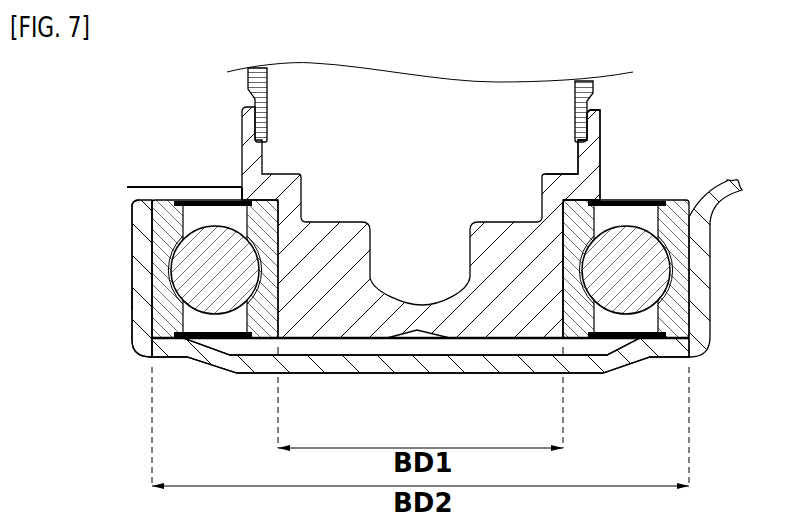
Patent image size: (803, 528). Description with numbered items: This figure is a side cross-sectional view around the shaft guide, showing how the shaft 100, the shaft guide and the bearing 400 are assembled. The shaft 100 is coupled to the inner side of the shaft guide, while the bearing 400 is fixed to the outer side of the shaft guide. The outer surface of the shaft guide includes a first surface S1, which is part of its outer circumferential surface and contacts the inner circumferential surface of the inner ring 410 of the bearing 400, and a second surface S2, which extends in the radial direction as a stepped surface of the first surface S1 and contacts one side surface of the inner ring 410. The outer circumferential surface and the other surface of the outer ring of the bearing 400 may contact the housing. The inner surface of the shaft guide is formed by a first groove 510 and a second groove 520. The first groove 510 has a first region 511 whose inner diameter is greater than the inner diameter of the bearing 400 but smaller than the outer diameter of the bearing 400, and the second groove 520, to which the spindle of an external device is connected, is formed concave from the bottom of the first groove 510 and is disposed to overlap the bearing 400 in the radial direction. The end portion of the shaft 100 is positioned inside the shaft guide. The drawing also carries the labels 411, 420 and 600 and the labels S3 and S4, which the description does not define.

The shaft 100 is at (243, 87).
The bearing 400 is at (140, 201).
The inner ring 410 is at (255, 318).
The upper flange of housing 411 is at (240, 197).
The side wall of housing 420 is at (160, 316).
The first groove 510 is at (553, 155).
The first region 511 is at (337, 222).
The second groove 520 is at (447, 280).
The damping member 600 is at (142, 303).
The first surface S1 is at (563, 230).
The second surface S2 is at (592, 187).
The third surface S3 is at (588, 107).
The fourth surface S4 is at (592, 140).